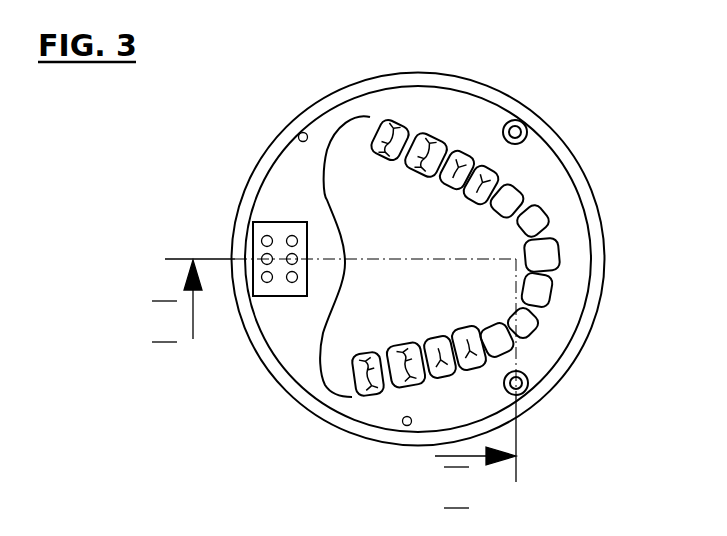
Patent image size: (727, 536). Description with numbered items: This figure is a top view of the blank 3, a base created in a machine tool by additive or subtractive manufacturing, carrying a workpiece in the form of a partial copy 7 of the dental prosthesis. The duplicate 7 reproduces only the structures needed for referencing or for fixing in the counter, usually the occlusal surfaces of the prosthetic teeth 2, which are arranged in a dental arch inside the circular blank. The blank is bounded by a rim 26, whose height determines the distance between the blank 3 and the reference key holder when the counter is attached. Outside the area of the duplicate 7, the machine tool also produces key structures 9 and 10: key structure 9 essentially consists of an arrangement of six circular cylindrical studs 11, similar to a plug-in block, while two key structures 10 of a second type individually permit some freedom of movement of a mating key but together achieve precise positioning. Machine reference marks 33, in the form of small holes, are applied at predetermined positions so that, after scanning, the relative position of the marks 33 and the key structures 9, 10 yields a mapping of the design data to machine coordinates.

The teeth 2 is at (545, 293).
The blank 3 is at (571, 70).
The partial copy of dental prosthesis 7 is at (398, 122).
The key structure 9 is at (273, 292).
The key structure 10 is at (527, 137).
The circular studs 11 is at (290, 240).
The rim 26 is at (446, 82).
The machine reference marks 33 is at (300, 134).